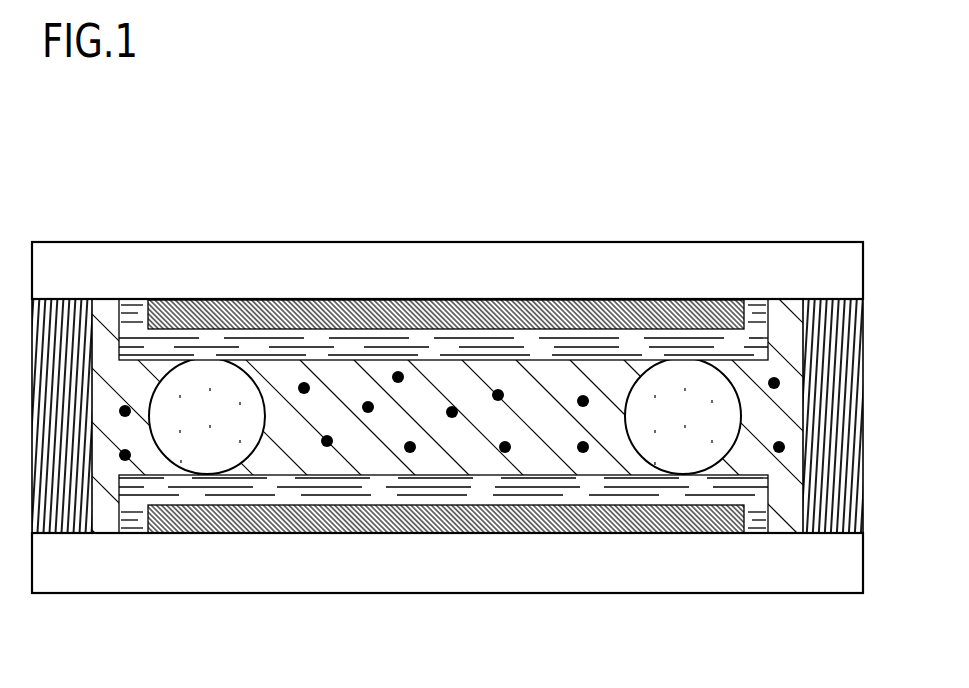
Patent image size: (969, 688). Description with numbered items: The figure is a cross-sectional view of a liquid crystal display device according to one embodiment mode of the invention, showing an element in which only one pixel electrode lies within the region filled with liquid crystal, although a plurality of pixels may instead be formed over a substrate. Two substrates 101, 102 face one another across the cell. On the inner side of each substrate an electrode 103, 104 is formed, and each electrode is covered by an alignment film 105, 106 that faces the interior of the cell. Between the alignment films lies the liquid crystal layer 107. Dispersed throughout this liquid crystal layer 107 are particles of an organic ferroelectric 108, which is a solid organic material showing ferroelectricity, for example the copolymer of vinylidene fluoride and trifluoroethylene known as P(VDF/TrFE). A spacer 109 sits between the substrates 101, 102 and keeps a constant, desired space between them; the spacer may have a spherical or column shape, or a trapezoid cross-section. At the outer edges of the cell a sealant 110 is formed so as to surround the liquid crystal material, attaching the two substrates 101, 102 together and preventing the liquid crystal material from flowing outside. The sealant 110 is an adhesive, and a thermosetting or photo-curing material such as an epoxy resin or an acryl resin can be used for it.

The substrate 101 is at (290, 260).
The substrate 102 is at (233, 578).
The electrode 103 is at (312, 312).
The electrode 104 is at (315, 527).
The alignment film 105 is at (445, 343).
The alignment film 106 is at (445, 493).
The liquid crystal layer 107 is at (565, 382).
The organic ferroelectric 108 is at (778, 380).
The spacer 109 is at (208, 417).
The sealant 110 is at (55, 500).